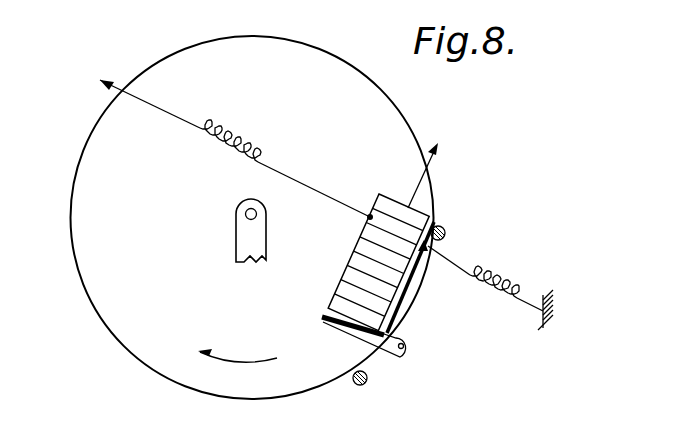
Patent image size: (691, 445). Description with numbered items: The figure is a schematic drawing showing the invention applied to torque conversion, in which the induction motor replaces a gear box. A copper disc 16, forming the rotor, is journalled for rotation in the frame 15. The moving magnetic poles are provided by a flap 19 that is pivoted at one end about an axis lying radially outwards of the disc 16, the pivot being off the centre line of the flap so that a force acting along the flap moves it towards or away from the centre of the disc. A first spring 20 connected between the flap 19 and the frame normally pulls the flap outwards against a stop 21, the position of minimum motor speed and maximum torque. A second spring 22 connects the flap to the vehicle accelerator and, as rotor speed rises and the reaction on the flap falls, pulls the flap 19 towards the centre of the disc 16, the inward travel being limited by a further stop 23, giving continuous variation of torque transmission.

The frame 15 is at (239, 234).
The disc 16 is at (118, 314).
The flap 19 is at (412, 349).
The first spring 20 is at (503, 280).
The stop 21 is at (448, 230).
The second spring 22 is at (234, 140).
The further stop 23 is at (367, 383).